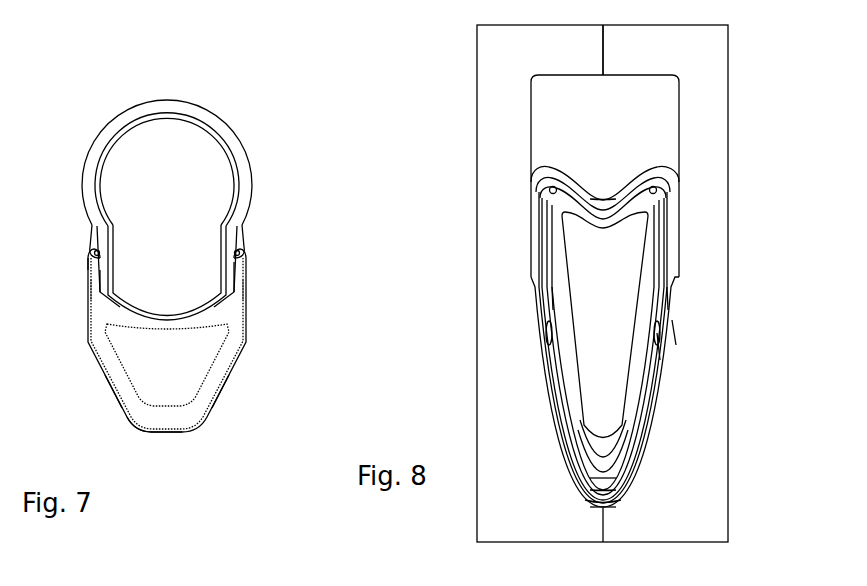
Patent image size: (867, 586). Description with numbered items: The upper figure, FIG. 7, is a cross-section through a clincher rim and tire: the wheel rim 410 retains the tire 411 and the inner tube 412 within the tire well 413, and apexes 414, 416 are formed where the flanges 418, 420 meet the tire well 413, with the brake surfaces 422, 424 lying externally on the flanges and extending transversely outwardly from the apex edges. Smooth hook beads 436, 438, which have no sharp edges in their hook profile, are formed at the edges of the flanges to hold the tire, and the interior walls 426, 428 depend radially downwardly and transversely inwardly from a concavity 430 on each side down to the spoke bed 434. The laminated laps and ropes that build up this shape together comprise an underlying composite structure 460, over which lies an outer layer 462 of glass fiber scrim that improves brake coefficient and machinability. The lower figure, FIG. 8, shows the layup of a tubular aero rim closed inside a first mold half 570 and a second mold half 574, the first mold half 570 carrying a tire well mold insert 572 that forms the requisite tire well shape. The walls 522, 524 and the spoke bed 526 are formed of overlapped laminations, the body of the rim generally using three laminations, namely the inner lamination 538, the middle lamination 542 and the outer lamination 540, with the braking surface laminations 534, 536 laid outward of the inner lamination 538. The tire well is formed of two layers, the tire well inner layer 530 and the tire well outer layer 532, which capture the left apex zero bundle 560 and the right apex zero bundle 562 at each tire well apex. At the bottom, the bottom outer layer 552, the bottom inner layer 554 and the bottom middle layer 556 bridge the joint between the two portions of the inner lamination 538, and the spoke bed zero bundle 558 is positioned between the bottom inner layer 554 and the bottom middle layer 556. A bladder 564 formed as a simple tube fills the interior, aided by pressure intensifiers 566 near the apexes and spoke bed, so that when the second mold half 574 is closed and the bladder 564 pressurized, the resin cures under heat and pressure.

In FIG. 7, the tire 411 is at (167, 100).
In FIG. 7, the inner tube 412 is at (182, 118).
In FIG. 7, the tire well 413 is at (123, 318).
In FIG. 7, the hook bead 436 is at (96, 249).
In FIG. 7, the hook bead 438 is at (238, 248).
In FIG. 7, the brake surface 422 is at (88, 255).
In FIG. 7, the wheel rim 410 is at (87, 282).
In FIG. 7, the flange 418 is at (92, 287).
In FIG. 7, the apex 414 is at (98, 308).
In FIG. 7, the concavity 430 is at (92, 338).
In FIG. 7, the flange 420 is at (241, 268).
In FIG. 7, the brake surface 424 is at (247, 285).
In FIG. 7, the apex 416 is at (232, 310).
In FIG. 7, the interior wall 426 is at (118, 380).
In FIG. 7, the interior wall 428 is at (215, 380).
In FIG. 7, the spoke bed 434 is at (175, 430).
In FIG. 7, the outer layer 462 is at (130, 427).
In FIG. 7, the underlying composite structure 460 is at (157, 420).
In FIG. 8, the first mold half 570 is at (602, 283).
In FIG. 8, the second mold half 574 is at (641, 50).
In FIG. 8, the tire well mold insert 572 is at (550, 125).
In FIG. 8, the left apex 0 bundle 560 is at (540, 182).
In FIG. 8, the right apex 0 bundle 562 is at (672, 172).
In FIG. 8, the pressure intensifier 566 is at (537, 190).
In FIG. 8, the braking surface lamination 534 is at (531, 207).
In FIG. 8, the braking surface lamination 536 is at (681, 208).
In FIG. 8, the wall 522 is at (538, 293).
In FIG. 8, the wall 524 is at (668, 300).
In FIG. 8, the tire well inner layer 530 is at (605, 210).
In FIG. 8, the tire well outer layer 532 is at (597, 202).
In FIG. 8, the inner lamination 538 is at (673, 302).
In FIG. 8, the bladder 564 is at (555, 300).
In FIG. 8, the middle lamination 542 is at (663, 348).
In FIG. 8, the outer lamination 540 is at (675, 335).
In FIG. 8, the spoke bed 526 is at (583, 472).
In FIG. 8, the bottom inner layer 554 is at (598, 478).
In FIG. 8, the spoke bed 0 bundle 558 is at (613, 488).
In FIG. 8, the bottom middle layer 556 is at (588, 498).
In FIG. 8, the bottom outer layer 552 is at (610, 506).